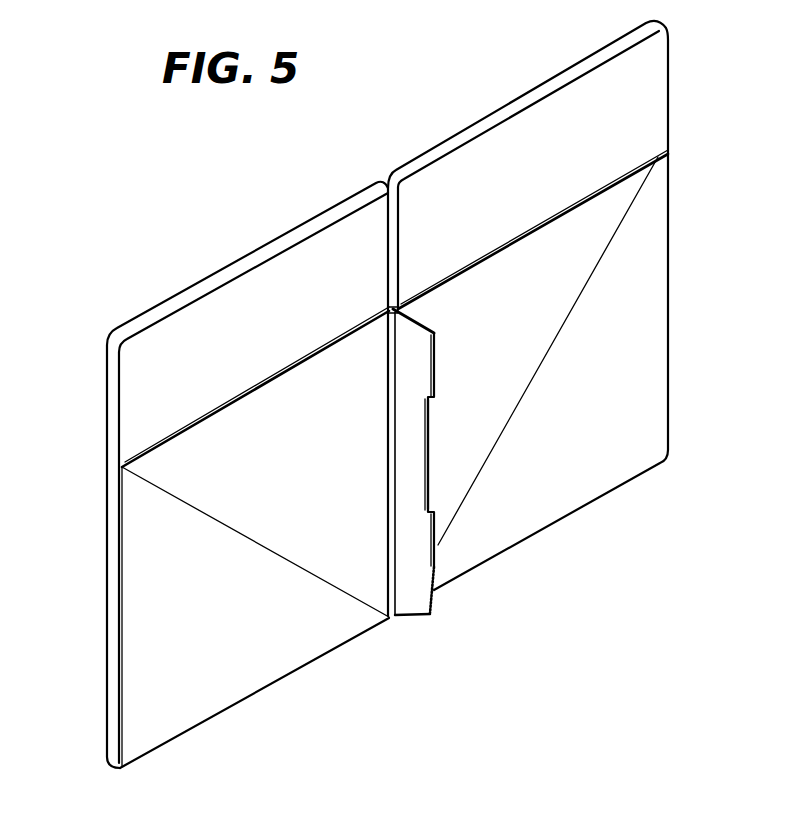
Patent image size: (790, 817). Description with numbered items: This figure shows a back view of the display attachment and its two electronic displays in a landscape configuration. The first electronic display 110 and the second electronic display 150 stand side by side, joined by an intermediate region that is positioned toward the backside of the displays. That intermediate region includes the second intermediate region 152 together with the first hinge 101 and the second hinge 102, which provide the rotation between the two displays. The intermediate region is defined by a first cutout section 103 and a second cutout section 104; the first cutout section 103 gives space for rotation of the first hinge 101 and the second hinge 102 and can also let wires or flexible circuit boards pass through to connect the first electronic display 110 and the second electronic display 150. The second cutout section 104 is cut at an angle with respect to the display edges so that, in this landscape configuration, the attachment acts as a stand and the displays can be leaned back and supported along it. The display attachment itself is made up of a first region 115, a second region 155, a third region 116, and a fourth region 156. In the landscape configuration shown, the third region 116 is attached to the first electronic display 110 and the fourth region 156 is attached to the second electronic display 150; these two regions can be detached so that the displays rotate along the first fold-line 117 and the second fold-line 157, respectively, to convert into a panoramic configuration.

The first hinge 101 is at (440, 355).
The first electronic display 110 is at (653, 116).
The first region 115 is at (635, 352).
The third region 116 is at (597, 235).
The first fold-line 117 is at (580, 297).
The second electronic display 150 is at (153, 437).
The second intermediate region 152 is at (415, 377).
The second region 155 is at (152, 606).
The fourth region 156 is at (212, 492).
The second fold-line 157 is at (268, 547).
The second hinge 102 is at (437, 547).
The first cutout section 103 is at (445, 447).
The second cutout section 104 is at (403, 637).